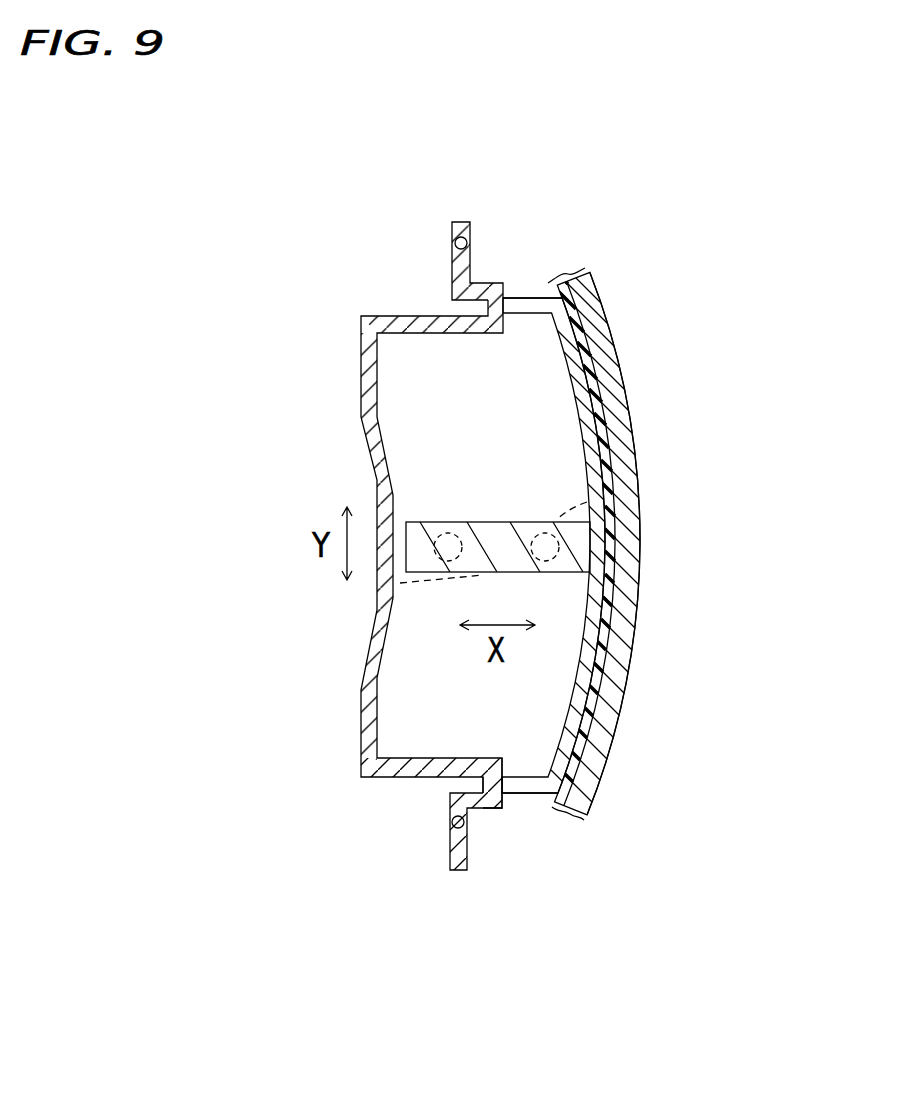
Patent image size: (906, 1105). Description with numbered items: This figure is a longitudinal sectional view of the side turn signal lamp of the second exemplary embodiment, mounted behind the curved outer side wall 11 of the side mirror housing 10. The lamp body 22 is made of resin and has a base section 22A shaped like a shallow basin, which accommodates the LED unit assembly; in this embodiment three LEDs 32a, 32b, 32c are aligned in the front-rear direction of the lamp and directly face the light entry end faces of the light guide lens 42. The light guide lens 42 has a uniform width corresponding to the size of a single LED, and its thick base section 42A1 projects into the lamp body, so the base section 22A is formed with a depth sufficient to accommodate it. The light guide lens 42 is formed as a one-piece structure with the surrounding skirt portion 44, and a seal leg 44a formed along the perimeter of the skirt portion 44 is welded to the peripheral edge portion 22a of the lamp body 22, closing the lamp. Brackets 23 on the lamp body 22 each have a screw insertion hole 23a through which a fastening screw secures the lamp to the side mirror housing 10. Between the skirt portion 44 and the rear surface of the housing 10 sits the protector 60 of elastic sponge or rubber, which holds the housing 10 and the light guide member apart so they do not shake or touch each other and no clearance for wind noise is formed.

The side mirror housing 10 is at (669, 530).
The curved outer side wall 11 is at (640, 635).
The lamp body 22 is at (335, 546).
The base section 22A is at (358, 702).
The peripheral edge portion 22a is at (483, 808).
The bracket 23 is at (462, 221).
The screw insertion hole 23a is at (455, 237).
The LED 32a is at (587, 502).
The LED 32b is at (400, 583).
The LED 32c is at (400, 505).
The light guide lens 42 is at (405, 467).
The thick base section 42A1 is at (478, 521).
The skirt portion 44 is at (612, 717).
The seal leg 44a is at (522, 293).
The protector 60 is at (640, 522).